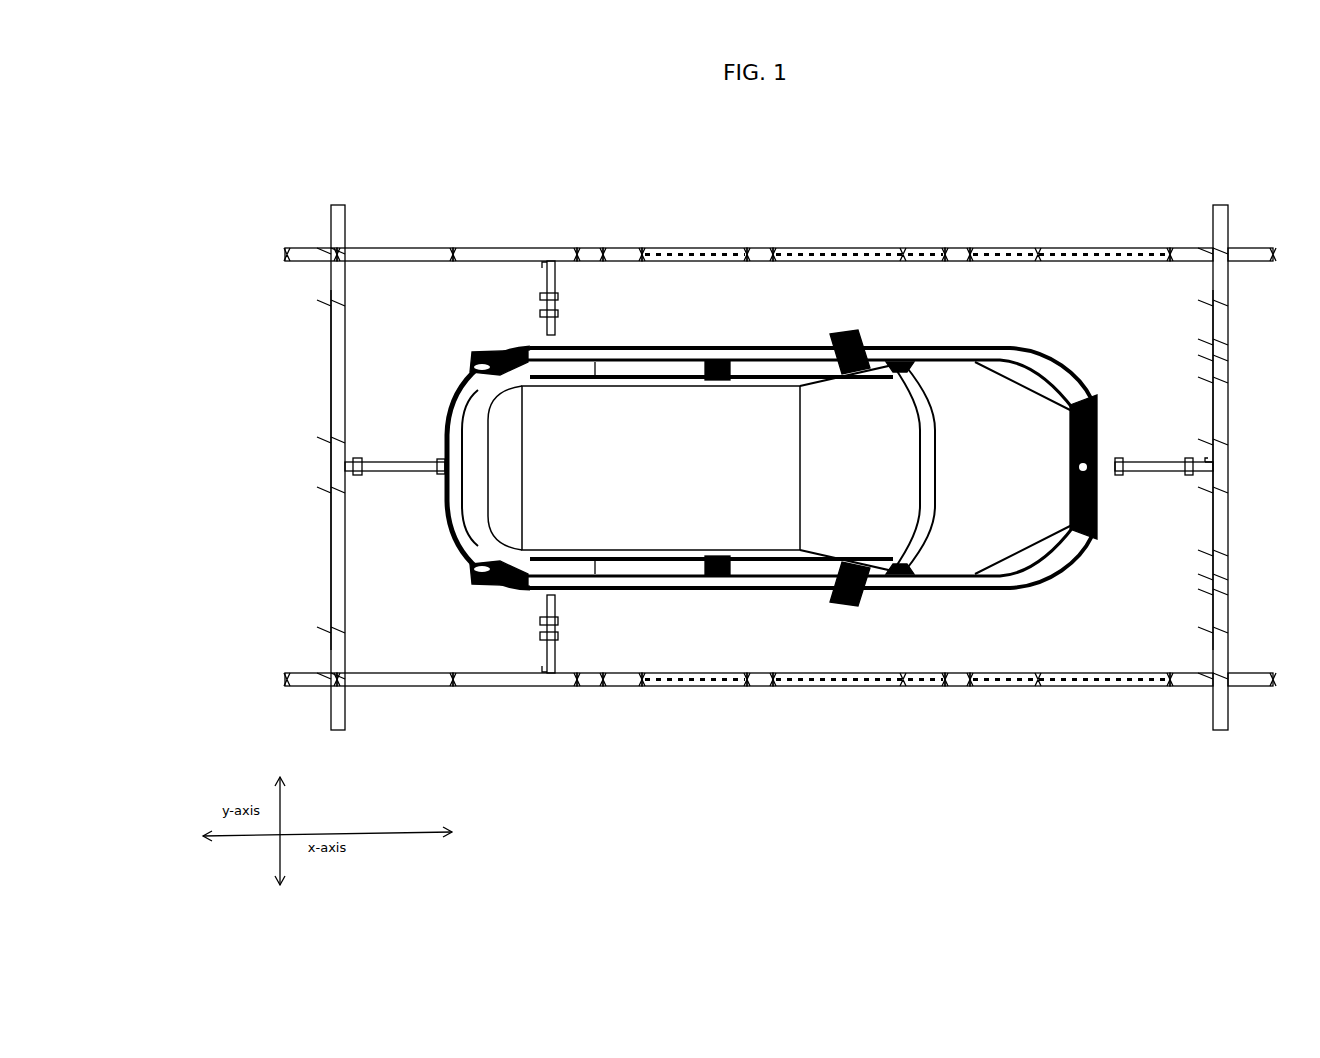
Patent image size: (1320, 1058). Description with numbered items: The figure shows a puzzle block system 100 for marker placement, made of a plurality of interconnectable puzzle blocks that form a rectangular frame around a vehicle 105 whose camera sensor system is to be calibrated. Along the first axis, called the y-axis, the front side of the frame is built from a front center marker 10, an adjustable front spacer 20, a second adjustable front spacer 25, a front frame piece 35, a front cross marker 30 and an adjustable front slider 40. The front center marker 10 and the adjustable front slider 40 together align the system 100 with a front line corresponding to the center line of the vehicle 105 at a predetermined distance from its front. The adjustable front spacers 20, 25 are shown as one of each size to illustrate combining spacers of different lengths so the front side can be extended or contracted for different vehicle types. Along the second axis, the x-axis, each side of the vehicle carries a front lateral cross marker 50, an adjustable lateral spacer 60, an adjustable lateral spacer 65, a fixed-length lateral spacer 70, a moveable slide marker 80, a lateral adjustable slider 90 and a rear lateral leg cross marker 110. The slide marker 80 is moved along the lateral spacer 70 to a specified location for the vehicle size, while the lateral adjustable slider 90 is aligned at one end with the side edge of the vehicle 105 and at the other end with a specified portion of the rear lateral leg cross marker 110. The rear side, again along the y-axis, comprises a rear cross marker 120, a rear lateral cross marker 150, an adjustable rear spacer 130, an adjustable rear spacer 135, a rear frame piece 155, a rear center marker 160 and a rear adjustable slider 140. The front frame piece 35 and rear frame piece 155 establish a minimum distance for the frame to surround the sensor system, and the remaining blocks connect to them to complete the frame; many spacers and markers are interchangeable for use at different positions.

The puzzle block system 100 is at (1162, 110).
The vehicle 105 is at (1030, 330).
The front center marker 10 is at (1228, 420).
The adjustable front spacer 20 is at (1228, 345).
The adjustable front spacer 25 is at (1228, 370).
The front cross marker 30 is at (1222, 205).
The front frame piece 35 is at (1228, 320).
The adjustable front slider 40 is at (1150, 472).
The front lateral cross marker 50 is at (1190, 248).
The adjustable lateral spacer 60 is at (623, 248).
The adjustable lateral spacer 65 is at (592, 248).
The lateral spacer 70 is at (693, 248).
The moveable slide marker 80 is at (760, 248).
The lateral adjustable slider 90 is at (540, 293).
The rear lateral leg cross marker 110 is at (483, 248).
The rear cross marker 120 is at (262, 155).
The adjustable rear spacer 130 is at (331, 355).
The adjustable rear spacer 135 is at (331, 385).
The rear adjustable slider 140 is at (353, 466).
The rear lateral cross marker 150 is at (433, 772).
The rear frame piece 155 is at (331, 330).
The rear center marker 160 is at (331, 410).